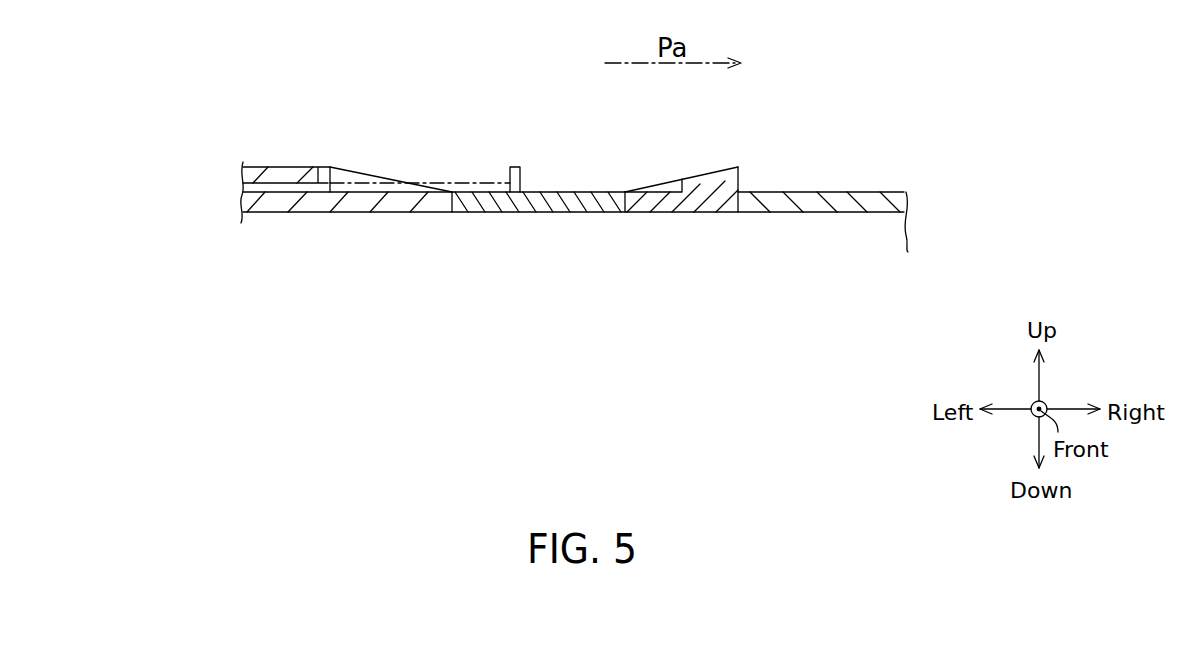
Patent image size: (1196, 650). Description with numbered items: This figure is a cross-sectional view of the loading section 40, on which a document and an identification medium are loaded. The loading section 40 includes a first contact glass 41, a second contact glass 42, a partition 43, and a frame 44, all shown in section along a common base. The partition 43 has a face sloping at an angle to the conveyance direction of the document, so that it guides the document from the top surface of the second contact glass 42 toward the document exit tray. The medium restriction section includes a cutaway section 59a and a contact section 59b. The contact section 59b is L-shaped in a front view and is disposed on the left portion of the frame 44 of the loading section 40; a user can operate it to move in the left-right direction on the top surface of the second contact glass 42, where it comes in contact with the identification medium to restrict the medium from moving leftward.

The loading section 40 is at (783, 100).
The first contact glass 41 is at (837, 200).
The second contact glass 42 is at (569, 197).
The partition 43 is at (713, 180).
The frame 44 is at (275, 172).
The cutaway section 59a is at (660, 173).
The contact section 59b is at (328, 167).